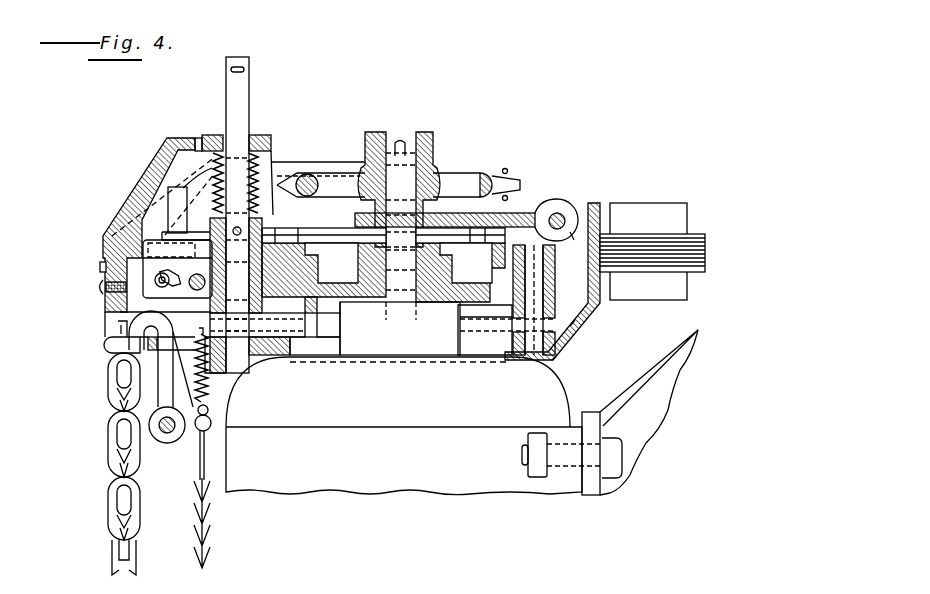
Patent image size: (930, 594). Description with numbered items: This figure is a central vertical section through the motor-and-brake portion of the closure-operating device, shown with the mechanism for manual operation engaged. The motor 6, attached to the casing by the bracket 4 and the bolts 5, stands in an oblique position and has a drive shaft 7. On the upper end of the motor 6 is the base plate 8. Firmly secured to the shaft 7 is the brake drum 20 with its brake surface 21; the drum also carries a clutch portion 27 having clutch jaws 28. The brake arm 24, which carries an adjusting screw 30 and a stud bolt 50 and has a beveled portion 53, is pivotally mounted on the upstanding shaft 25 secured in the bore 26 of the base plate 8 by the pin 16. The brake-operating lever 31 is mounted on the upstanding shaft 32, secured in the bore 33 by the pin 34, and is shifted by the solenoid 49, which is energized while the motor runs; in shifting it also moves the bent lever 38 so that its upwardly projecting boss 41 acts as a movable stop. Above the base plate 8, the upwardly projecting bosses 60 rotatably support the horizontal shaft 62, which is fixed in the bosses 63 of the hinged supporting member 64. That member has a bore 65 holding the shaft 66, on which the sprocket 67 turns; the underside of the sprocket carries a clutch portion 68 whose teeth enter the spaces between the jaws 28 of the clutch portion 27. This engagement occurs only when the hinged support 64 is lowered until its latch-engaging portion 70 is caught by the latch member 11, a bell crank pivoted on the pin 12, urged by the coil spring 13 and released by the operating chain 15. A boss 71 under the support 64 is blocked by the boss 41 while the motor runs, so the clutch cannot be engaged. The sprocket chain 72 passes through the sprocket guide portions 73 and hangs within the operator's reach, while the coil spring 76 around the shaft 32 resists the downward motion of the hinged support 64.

The bracket 4 is at (603, 430).
The bolts 5 is at (522, 455).
The motor 6 is at (326, 472).
The drive shaft 7 is at (405, 296).
The base plate 8 is at (575, 330).
The latch member 11 is at (150, 325).
The pin 12 is at (165, 442).
The coil spring 13 is at (208, 393).
The operating chain 15 is at (209, 541).
The pin 16 is at (512, 329).
The brake drum 20 is at (360, 298).
The brake surface 21 is at (478, 280).
The brake arm 24 is at (312, 313).
The upstanding shaft 25 is at (547, 290).
The bore 26 is at (556, 358).
The clutch portion 27 is at (430, 276).
The clutch jaws 28 is at (452, 254).
The adjusting screw 30 is at (138, 256).
The brake-operating lever 31 is at (338, 254).
The upstanding shaft 32 is at (244, 99).
The bore 33 is at (260, 366).
The pin 34 is at (262, 327).
The bent lever 38 is at (162, 236).
The upwardly projecting boss 41 is at (178, 208).
The solenoid 49 is at (700, 235).
The stud bolt 50 is at (205, 284).
The beveled portions 53 is at (106, 281).
The upwardly projecting bosses 60 is at (579, 206).
The horizontal shaft 62 is at (559, 213).
The bosses 63 is at (577, 244).
The hinged supporting member 64 is at (512, 213).
The bore 65 is at (434, 150).
The shaft 66 is at (404, 136).
The sprocket 67 is at (493, 172).
The clutch portion 68 is at (430, 234).
The latch-engaging portion 70 is at (112, 345).
The boss 71 is at (171, 264).
The sprocket chain 72 is at (506, 170).
The sprocket guide portions 73 is at (350, 163).
The coil spring 76 is at (263, 177).